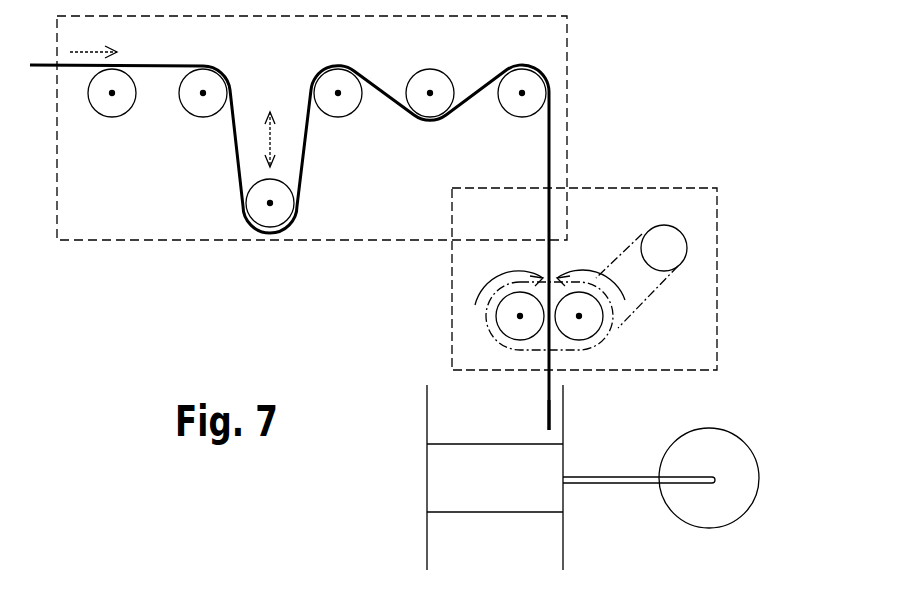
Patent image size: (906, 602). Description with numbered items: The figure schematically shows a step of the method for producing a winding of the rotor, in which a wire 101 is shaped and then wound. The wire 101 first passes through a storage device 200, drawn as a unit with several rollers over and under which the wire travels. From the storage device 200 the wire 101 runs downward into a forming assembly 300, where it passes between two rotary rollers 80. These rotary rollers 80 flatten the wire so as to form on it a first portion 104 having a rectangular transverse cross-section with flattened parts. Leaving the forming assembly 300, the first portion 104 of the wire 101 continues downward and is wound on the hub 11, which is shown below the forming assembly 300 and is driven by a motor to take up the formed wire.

The storage device 200 is at (522, 140).
The wire 101 is at (553, 172).
The forming assembly 300 is at (680, 332).
The rotary rollers 80 is at (498, 332).
The first portion 104 is at (550, 407).
The hub 11 is at (458, 487).